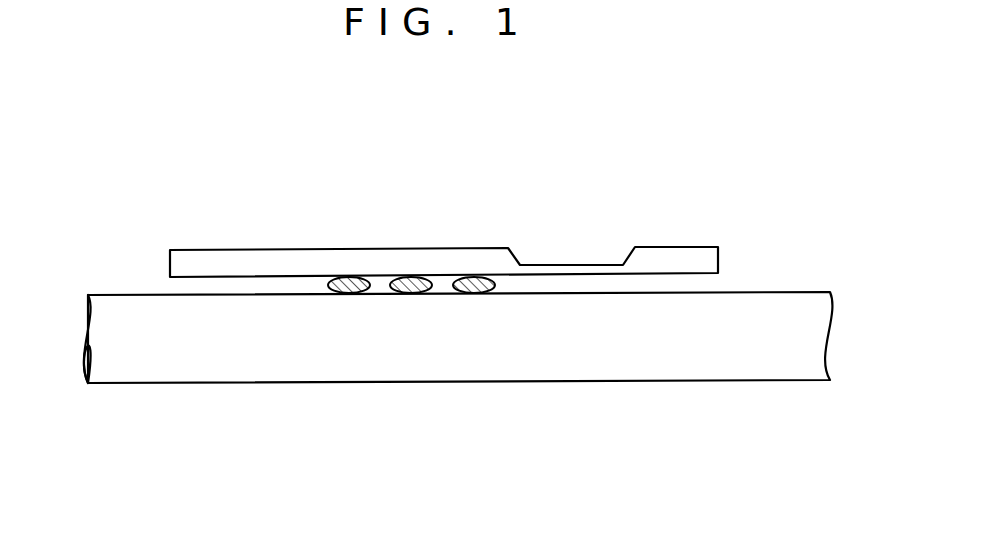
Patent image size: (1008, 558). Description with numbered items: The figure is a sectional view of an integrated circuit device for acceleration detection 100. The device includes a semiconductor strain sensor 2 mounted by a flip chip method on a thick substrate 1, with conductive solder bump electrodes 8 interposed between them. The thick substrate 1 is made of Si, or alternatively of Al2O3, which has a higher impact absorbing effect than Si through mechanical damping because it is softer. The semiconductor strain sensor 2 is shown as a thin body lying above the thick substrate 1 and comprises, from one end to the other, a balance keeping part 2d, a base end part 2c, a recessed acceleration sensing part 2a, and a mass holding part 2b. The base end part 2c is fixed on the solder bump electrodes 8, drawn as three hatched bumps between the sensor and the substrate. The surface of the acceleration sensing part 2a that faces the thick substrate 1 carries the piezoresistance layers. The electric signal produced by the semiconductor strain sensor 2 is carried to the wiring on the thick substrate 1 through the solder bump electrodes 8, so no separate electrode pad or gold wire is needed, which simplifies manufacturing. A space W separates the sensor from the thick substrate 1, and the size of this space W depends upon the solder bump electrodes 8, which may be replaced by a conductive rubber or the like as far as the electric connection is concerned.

The thick substrate 1 is at (815, 330).
The semiconductor strain sensor 2 is at (182, 263).
The acceleration sensing part 2a is at (562, 265).
The mass holding part 2b is at (698, 258).
The base end part 2c is at (417, 260).
The balance keeping part 2d is at (260, 260).
The solder bump electrode 8 is at (347, 277).
The integrated circuit device for acceleration detection 100 is at (460, 157).
The space W is at (700, 278).